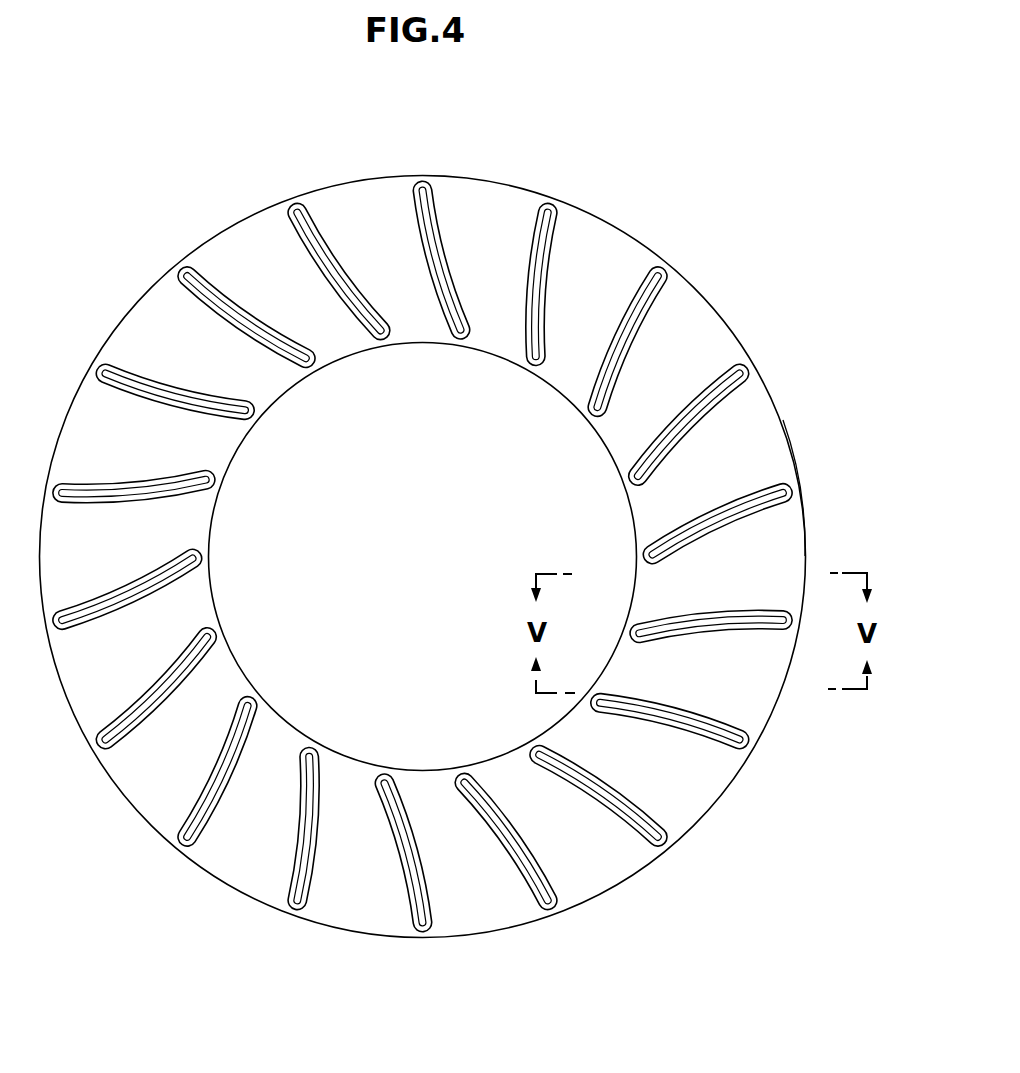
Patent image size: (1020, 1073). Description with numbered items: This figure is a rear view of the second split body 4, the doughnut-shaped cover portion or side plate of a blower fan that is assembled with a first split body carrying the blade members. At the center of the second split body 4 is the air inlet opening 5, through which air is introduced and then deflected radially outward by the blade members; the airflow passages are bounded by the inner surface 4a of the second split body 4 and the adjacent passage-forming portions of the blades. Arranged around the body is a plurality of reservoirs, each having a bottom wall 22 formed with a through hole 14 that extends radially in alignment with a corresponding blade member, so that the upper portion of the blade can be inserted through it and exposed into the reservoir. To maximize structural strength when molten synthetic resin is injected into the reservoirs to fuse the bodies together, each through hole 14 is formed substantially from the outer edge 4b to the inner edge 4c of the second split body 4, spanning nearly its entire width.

The second split body 4 is at (363, 170).
The inner surface of the second split body 4a is at (672, 778).
The outer edge of the second split body 4b is at (783, 420).
The inner edge of the second split body 4c is at (610, 460).
The air inlet opening 5 is at (413, 561).
The through hole 14 is at (540, 257).
The bottom wall 22 is at (543, 280).